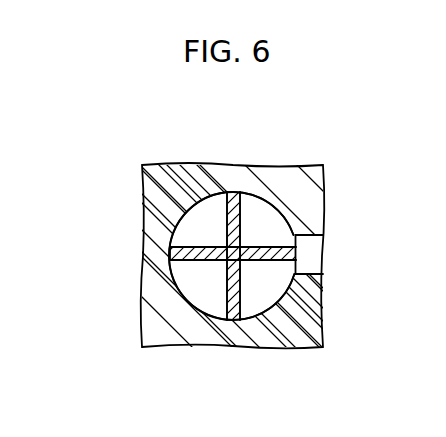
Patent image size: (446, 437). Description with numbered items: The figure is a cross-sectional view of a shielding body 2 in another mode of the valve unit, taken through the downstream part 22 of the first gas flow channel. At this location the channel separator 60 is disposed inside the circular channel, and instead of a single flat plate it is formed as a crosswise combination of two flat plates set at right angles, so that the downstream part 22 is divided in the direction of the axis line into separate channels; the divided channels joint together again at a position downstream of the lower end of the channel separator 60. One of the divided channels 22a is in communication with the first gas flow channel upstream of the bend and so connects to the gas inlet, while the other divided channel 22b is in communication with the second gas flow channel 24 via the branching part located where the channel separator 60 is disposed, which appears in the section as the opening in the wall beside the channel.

The substrate / body 2 is at (307, 192).
The downstream part of the first gas flow channel 22 is at (190, 298).
The divided channel 22a is at (214, 214).
The divided channel 22b is at (258, 222).
The second gas flow channel 24 is at (313, 267).
The channel separator 60 is at (197, 246).